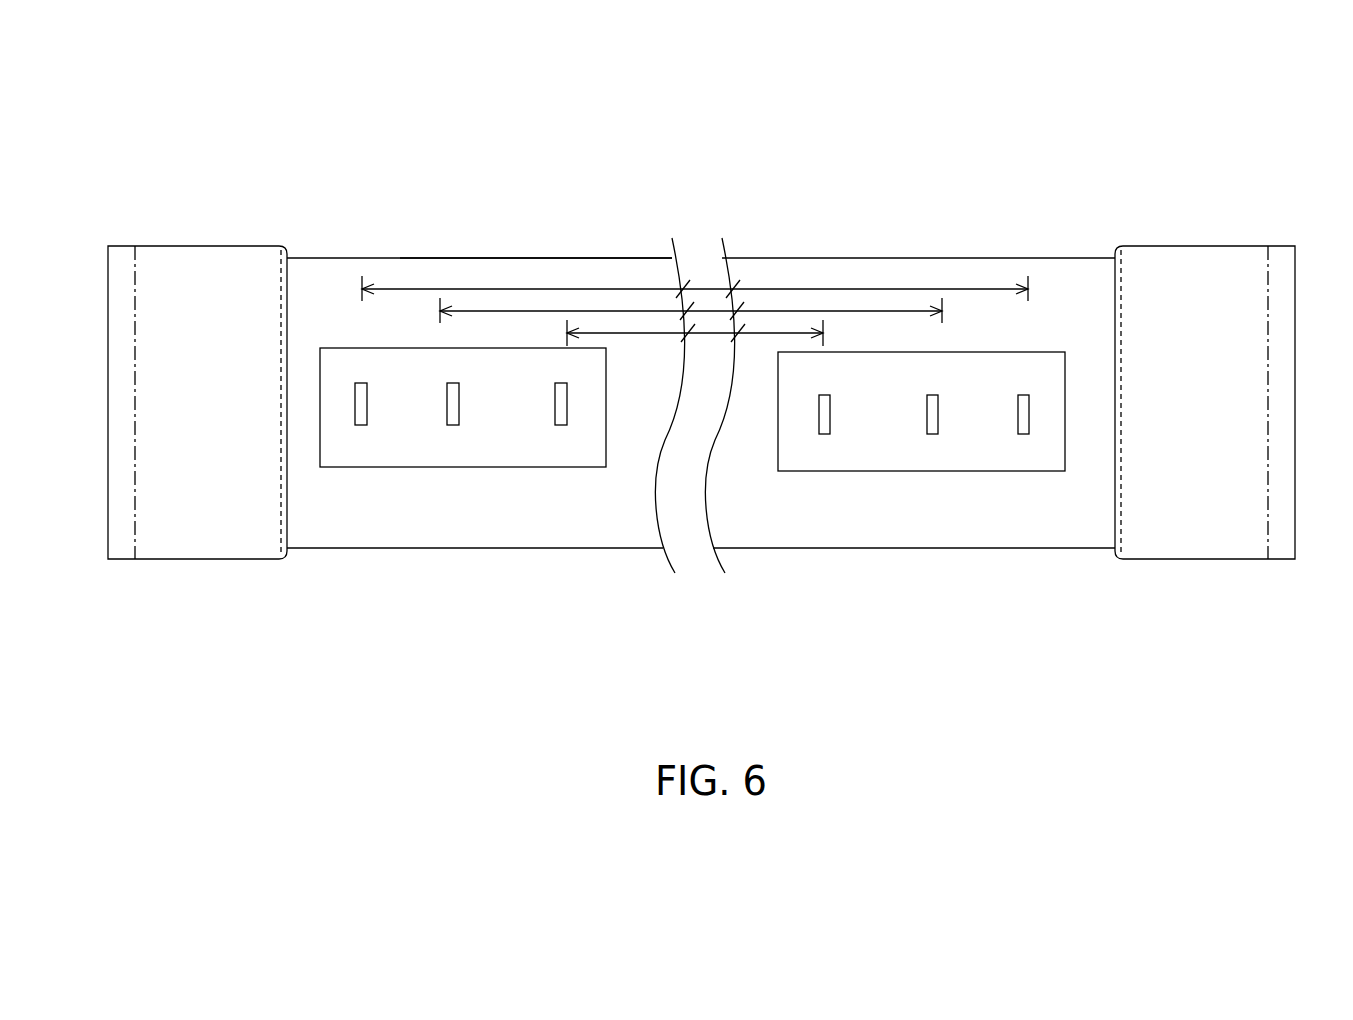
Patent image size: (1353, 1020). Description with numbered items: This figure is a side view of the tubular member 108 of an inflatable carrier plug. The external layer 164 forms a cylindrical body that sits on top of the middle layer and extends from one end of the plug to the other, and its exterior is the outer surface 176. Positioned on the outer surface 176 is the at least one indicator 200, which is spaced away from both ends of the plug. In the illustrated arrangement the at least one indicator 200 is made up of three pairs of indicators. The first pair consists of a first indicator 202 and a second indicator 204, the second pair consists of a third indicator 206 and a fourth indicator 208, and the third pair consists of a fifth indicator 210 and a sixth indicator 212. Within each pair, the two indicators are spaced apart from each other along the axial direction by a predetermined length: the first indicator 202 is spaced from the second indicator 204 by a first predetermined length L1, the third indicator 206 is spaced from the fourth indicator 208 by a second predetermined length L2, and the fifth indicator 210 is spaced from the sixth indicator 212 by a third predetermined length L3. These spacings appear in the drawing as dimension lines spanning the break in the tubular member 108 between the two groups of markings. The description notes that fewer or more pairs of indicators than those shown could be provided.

The tubular member 108 is at (955, 148).
The external layer 164 is at (487, 258).
The outer surface 176 is at (595, 257).
The at least one indicator 200 is at (330, 347).
The first indicator 202 is at (360, 408).
The second indicator 204 is at (1023, 410).
The third indicator 206 is at (452, 408).
The fourth indicator 208 is at (932, 410).
The fifth indicator 210 is at (560, 408).
The sixth indicator 212 is at (823, 410).
The first predetermined length L1 is at (975, 288).
The second predetermined length L2 is at (862, 312).
The third predetermined length L3 is at (760, 333).